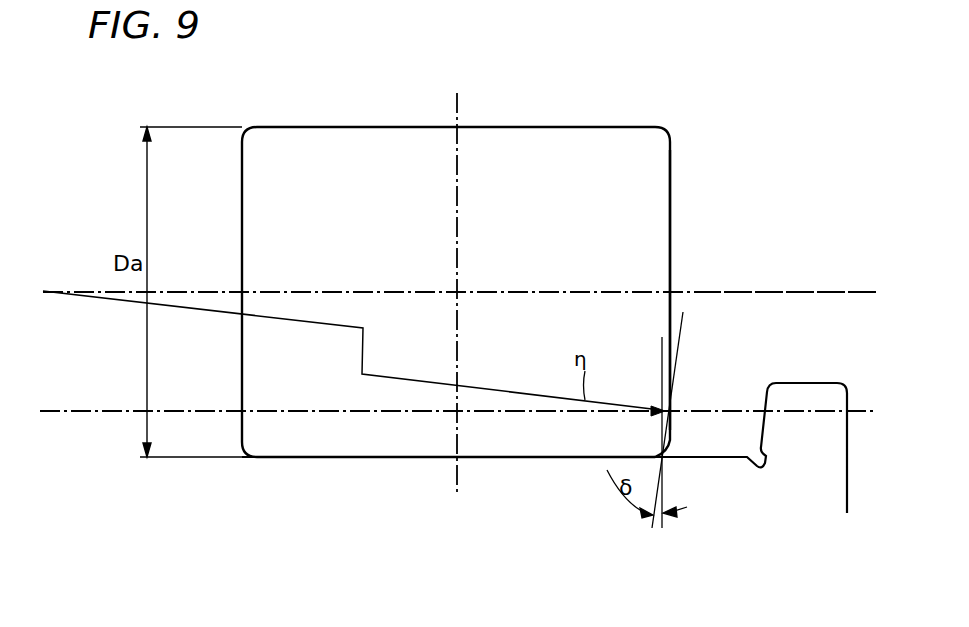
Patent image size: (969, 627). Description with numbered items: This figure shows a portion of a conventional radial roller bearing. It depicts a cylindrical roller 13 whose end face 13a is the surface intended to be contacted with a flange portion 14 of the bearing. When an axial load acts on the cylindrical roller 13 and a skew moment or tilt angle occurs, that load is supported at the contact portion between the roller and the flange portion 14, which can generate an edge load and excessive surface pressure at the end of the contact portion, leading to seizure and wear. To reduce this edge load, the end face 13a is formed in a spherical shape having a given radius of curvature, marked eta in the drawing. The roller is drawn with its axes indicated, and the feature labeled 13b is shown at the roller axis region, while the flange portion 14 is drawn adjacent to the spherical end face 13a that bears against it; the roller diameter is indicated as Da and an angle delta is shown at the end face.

The cylindrical roller 13 is at (548, 133).
The end face 13a is at (672, 207).
The lens optical axis 13b is at (777, 290).
The flange portion 14 is at (806, 402).